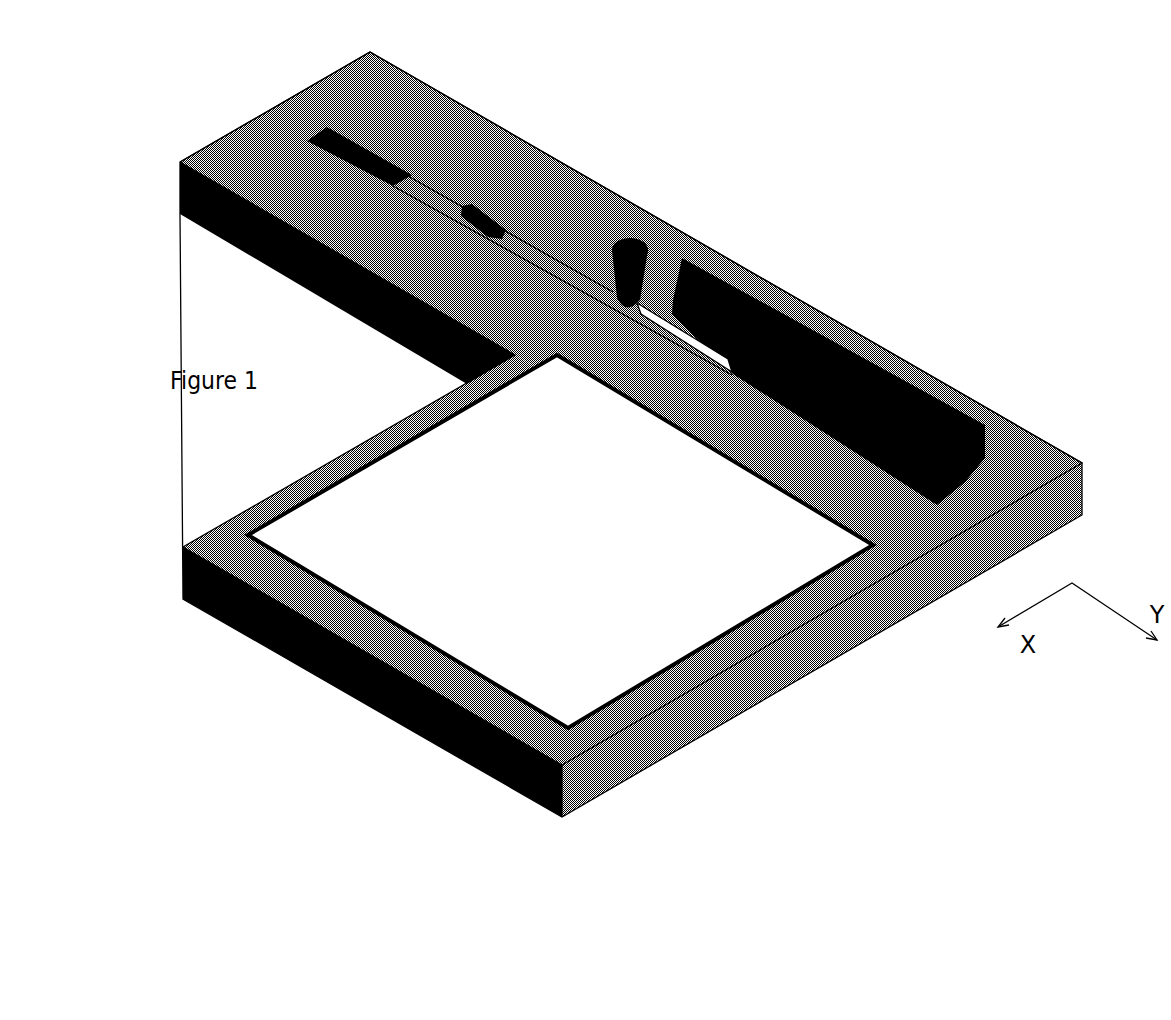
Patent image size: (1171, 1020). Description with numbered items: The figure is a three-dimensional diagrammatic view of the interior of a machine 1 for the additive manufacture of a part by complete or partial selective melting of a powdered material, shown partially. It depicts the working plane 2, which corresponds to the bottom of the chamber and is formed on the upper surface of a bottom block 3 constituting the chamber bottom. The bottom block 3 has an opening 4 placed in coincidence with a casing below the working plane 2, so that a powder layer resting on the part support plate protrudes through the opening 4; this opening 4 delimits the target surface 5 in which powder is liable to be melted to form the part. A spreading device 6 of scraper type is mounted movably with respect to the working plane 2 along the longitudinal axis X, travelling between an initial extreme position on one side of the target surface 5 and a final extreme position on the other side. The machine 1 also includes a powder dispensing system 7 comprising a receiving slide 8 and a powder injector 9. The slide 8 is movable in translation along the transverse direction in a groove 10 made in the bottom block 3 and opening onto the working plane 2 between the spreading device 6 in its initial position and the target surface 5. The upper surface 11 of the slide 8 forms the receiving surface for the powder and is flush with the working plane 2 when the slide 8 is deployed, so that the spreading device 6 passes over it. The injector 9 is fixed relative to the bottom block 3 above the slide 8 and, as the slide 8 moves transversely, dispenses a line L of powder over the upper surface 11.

The machine 1 is at (631, 434).
The working plane 2 is at (631, 408).
The bottom block 3 is at (632, 640).
The opening 4 is at (700, 651).
The target surface 5 is at (536, 541).
The spreading device 6 is at (812, 320).
The powder dispensing system 7 is at (631, 312).
The receiving slide 8 is at (512, 238).
The powder injector 9 is at (642, 240).
The groove 10 is at (329, 122).
The upper surface 11 is at (562, 199).
The line of powder L is at (680, 322).